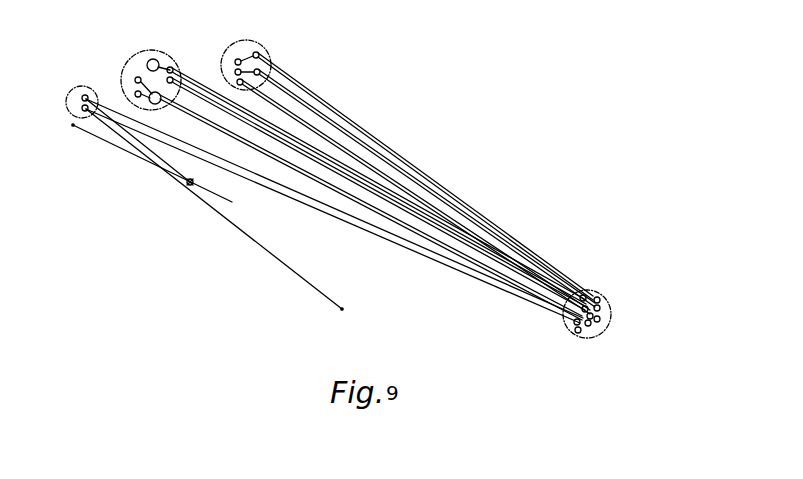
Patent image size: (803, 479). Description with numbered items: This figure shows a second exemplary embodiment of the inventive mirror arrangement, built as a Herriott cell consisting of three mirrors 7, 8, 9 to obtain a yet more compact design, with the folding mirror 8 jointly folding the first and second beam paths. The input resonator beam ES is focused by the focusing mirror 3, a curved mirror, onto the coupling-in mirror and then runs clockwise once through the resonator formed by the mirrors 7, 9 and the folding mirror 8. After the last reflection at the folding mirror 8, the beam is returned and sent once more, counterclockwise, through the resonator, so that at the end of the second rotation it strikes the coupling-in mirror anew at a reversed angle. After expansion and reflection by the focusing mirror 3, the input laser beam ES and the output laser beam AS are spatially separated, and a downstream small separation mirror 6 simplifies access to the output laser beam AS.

The focusing mirror 3 is at (299, 202).
The mirror 7 is at (326, 179).
The mirror 9 is at (382, 158).
The folding mirror 8 is at (614, 319).
The separation mirror 6 is at (217, 191).
The output laser beam AS is at (152, 163).
The input resonator beam ES is at (229, 217).